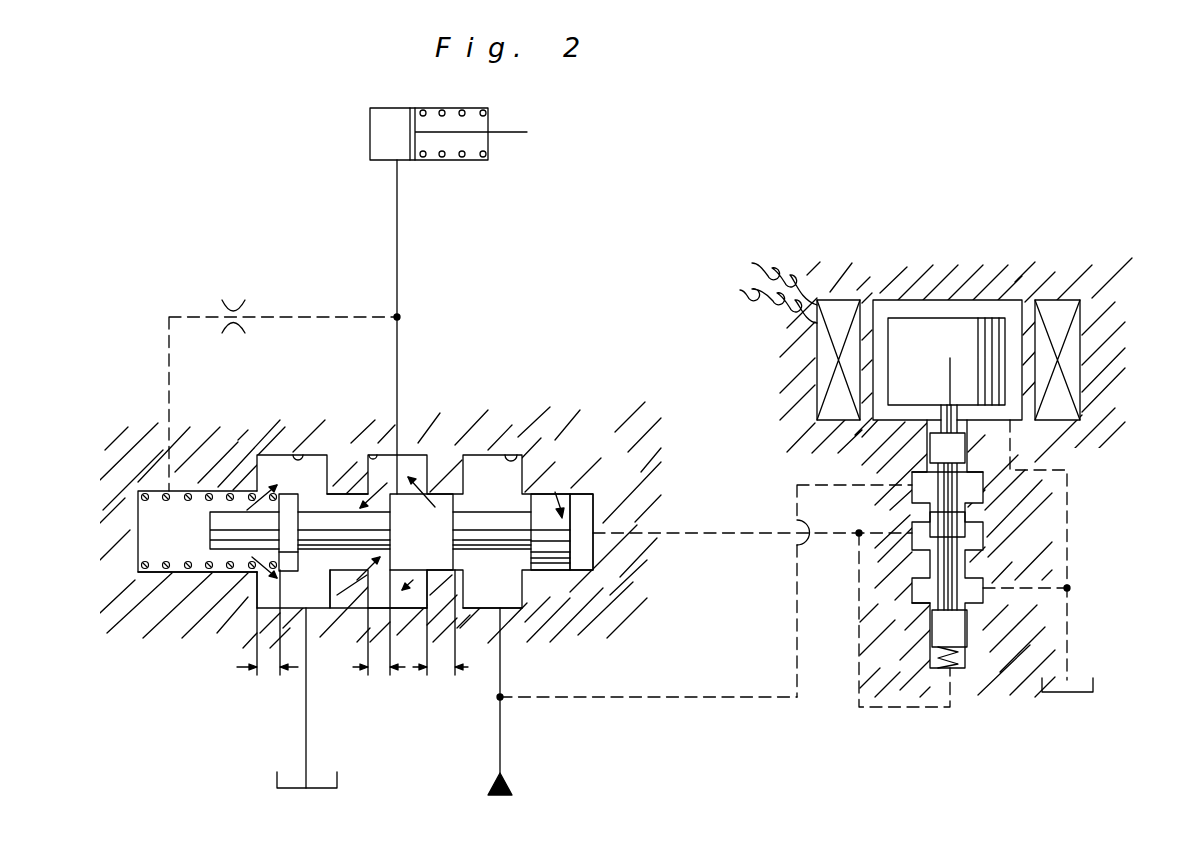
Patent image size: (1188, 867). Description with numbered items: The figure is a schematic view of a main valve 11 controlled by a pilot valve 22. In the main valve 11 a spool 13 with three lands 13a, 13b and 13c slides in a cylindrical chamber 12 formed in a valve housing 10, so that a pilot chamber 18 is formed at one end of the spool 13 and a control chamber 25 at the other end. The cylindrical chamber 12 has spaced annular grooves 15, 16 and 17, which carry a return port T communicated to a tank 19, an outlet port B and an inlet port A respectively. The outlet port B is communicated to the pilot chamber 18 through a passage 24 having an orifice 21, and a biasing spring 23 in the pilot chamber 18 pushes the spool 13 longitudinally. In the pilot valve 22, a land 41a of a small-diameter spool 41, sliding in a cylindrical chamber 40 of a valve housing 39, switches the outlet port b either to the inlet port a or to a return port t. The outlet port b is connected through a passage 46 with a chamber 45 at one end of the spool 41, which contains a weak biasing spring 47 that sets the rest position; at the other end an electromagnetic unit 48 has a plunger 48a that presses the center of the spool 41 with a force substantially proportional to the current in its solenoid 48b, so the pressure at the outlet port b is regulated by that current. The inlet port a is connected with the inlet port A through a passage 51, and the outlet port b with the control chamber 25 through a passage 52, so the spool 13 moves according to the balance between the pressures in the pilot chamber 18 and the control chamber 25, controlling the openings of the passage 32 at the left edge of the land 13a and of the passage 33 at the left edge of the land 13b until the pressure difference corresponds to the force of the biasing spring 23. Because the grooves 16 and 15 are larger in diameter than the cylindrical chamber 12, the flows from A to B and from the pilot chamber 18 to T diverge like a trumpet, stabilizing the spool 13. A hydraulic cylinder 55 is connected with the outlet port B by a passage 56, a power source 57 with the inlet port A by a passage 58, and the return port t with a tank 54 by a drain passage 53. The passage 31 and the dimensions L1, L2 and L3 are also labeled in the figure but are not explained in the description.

The valve housing 10 is at (580, 588).
The main valve 11 is at (124, 398).
The cylindrical chamber 12 is at (343, 492).
The spool 13 is at (438, 462).
The land 13a is at (286, 494).
The land 13b is at (403, 494).
The land 13c is at (550, 494).
The annular groove 15 is at (293, 455).
The annular groove 16 is at (369, 455).
The annular groove 17 is at (505, 455).
The pilot chamber 18 is at (153, 527).
The tank 19 is at (287, 775).
The orifice 21 is at (232, 307).
The pilot valve 22 is at (957, 271).
The biasing spring 23 is at (190, 573).
The passage 24 is at (285, 317).
The control chamber 25 is at (594, 512).
The passage 31 is at (427, 612).
The passage 32 is at (262, 578).
The passage 33 is at (364, 612).
The valve housing 39 is at (1013, 635).
The cylindrical chamber 40 is at (1043, 507).
The spool 41 is at (998, 637).
The land 41a is at (948, 527).
The chamber 45 is at (951, 627).
The passage 46 is at (858, 690).
The biasing spring 47 is at (932, 668).
The electromagnetic unit 48 is at (957, 307).
The plunger 48a is at (941, 334).
The solenoid 48b is at (1055, 306).
The passage 51 is at (716, 700).
The passage 52 is at (828, 535).
The drain passage 53 is at (1070, 620).
The tank 54 is at (1093, 683).
The hydraulic cylinder 55 is at (380, 137).
The passage 56 is at (397, 240).
The power source 57 is at (513, 785).
The passage 58 is at (503, 733).
The inlet port A is at (498, 610).
The outlet port B is at (408, 325).
The return port T is at (302, 617).
The overlap length L1 is at (440, 639).
The overlap length L2 is at (267, 639).
The overlap length L3 is at (379, 639).
The inlet port a is at (912, 476).
The outlet port b is at (868, 557).
The return port t is at (997, 600).